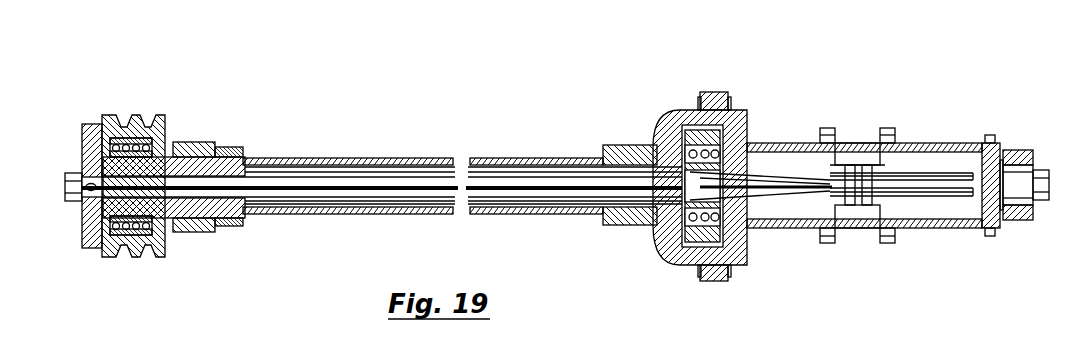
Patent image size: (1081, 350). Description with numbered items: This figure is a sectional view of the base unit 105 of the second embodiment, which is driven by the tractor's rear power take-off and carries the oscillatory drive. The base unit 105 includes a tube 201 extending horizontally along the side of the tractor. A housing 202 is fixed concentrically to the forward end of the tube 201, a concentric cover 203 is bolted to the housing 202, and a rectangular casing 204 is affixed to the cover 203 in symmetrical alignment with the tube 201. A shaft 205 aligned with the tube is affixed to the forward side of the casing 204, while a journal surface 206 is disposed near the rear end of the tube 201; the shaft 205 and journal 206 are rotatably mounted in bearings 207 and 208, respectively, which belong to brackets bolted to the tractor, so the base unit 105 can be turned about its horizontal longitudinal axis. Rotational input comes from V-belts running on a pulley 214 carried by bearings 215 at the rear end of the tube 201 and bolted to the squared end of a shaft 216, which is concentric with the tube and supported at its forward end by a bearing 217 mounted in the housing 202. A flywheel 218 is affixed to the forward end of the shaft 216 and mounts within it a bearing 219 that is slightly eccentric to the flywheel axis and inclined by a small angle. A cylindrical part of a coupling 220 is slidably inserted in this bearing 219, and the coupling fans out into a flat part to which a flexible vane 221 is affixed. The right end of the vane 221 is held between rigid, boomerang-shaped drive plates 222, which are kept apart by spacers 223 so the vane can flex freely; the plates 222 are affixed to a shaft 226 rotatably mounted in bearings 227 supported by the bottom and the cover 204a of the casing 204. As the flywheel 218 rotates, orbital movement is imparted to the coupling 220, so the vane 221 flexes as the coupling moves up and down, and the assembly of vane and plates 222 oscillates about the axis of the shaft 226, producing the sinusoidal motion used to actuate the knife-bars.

The base unit 105 is at (383, 156).
The tube 201 is at (392, 212).
The housing 202 is at (667, 243).
The cover 203 is at (724, 280).
The casing 204 is at (1003, 226).
The cover of casing 204a is at (797, 142).
The shaft 205 is at (1018, 176).
The journal surface 206 is at (194, 228).
The bearing 207 is at (1033, 216).
The bearing 208 is at (182, 233).
The pulley 214 is at (145, 255).
The bearings 215 is at (112, 252).
The shaft 216 is at (316, 186).
The bearing 217 is at (660, 214).
The flywheel 218 is at (697, 238).
The bearing 219 is at (702, 168).
The coupling 220 is at (677, 132).
The flexible vane 221 is at (812, 190).
The drive plates 222 is at (930, 173).
The spacers 223 is at (981, 178).
The shaft 226 is at (838, 163).
The bearings 227 is at (882, 152).